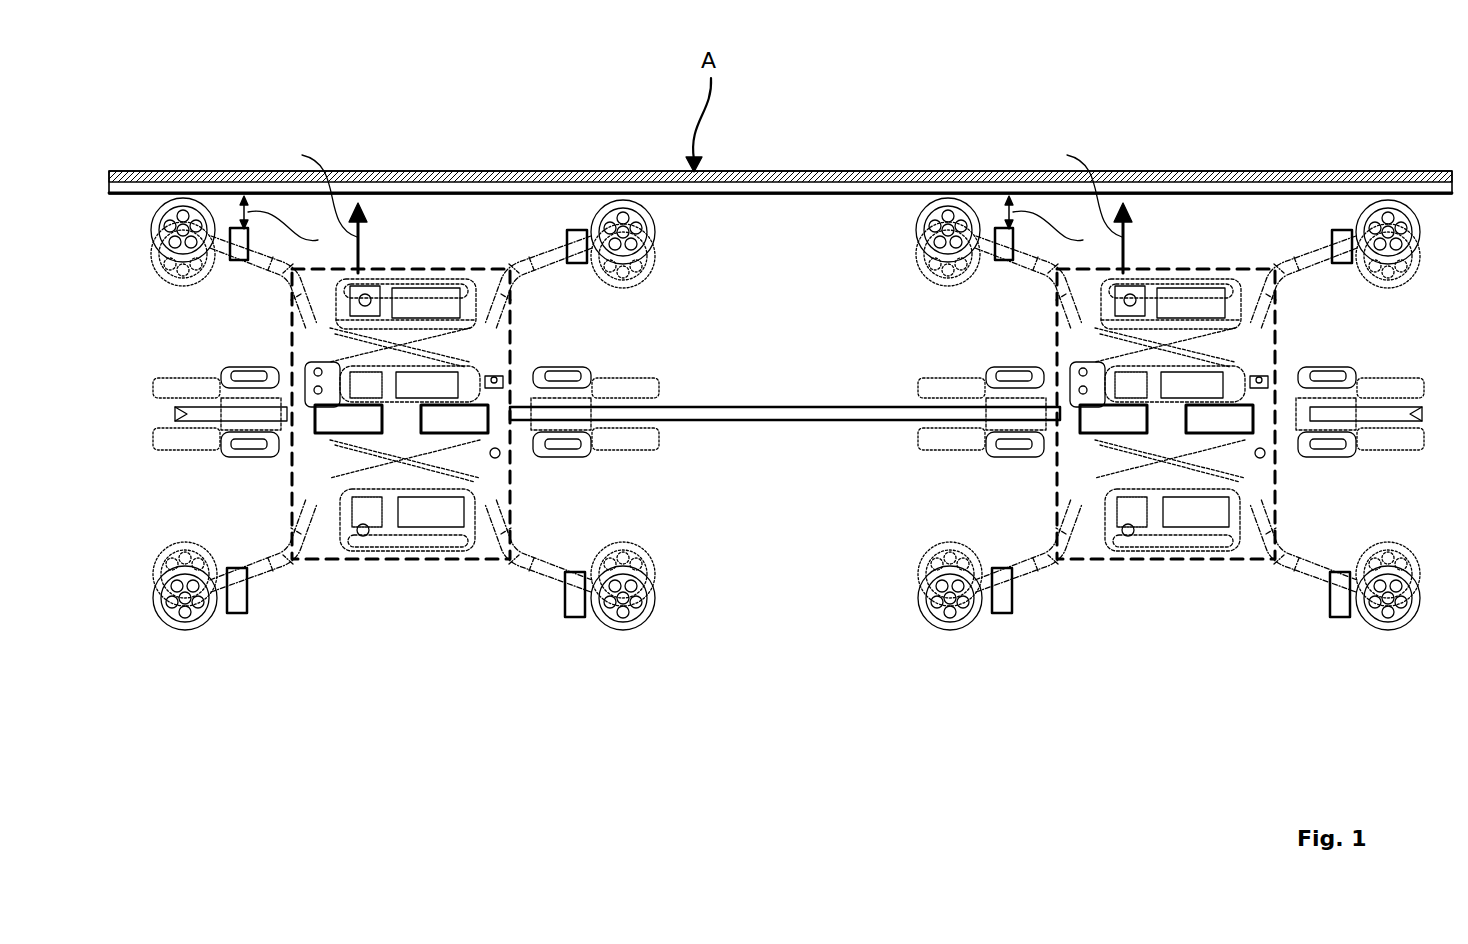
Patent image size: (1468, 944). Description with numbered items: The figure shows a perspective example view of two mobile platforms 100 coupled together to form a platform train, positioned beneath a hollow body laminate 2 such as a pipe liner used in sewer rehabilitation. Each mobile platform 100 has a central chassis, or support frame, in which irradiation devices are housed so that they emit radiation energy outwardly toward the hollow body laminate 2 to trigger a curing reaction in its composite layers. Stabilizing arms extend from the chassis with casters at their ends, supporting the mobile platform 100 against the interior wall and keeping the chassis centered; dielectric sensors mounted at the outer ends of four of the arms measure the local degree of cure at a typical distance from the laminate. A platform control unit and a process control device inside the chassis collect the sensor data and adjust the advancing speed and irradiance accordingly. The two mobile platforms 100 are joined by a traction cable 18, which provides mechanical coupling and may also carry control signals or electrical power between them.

The mobile platform 100 is at (176, 111).
The hollow body laminate 2 is at (851, 205).
The traction cable 18 is at (818, 421).